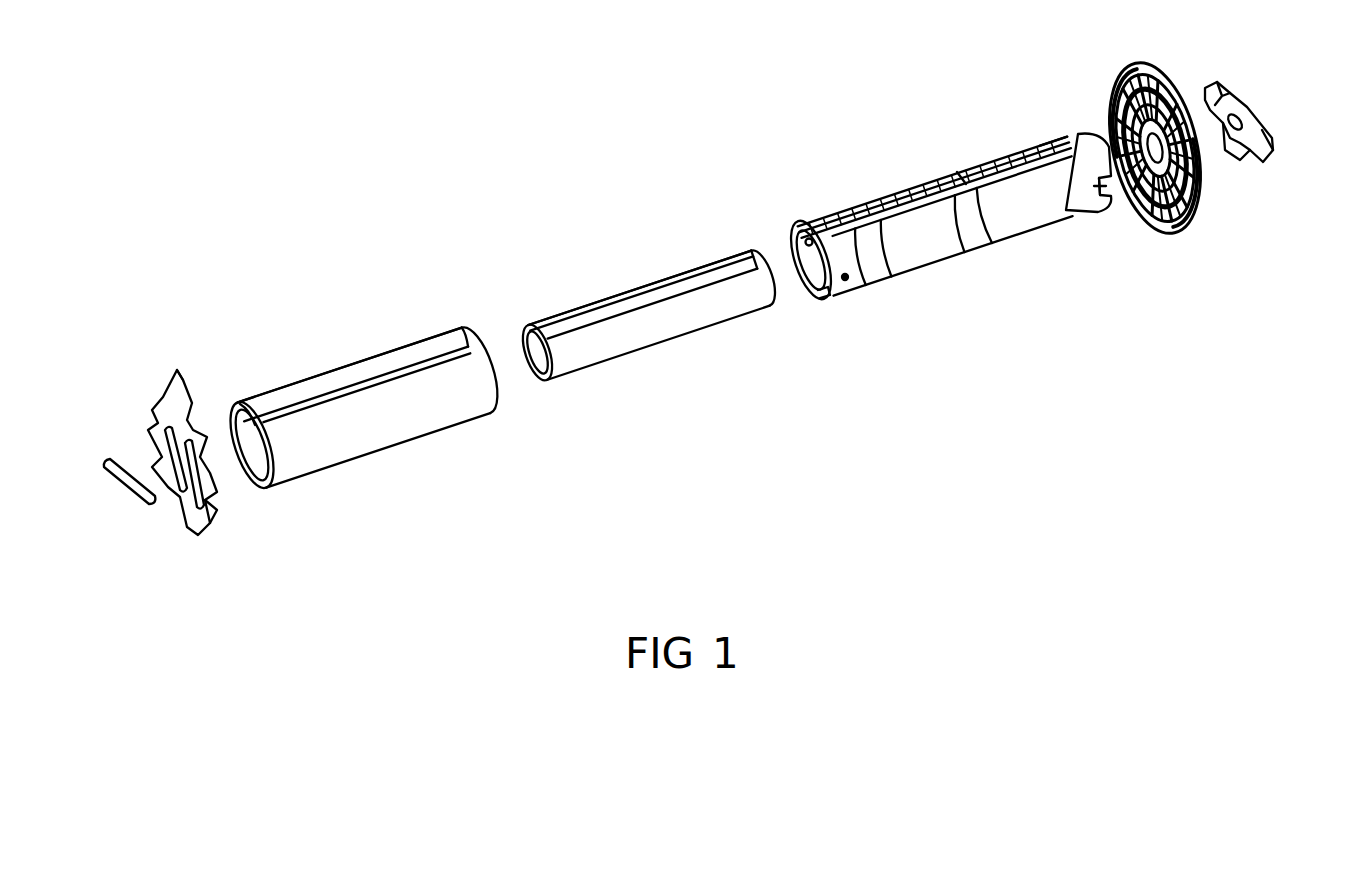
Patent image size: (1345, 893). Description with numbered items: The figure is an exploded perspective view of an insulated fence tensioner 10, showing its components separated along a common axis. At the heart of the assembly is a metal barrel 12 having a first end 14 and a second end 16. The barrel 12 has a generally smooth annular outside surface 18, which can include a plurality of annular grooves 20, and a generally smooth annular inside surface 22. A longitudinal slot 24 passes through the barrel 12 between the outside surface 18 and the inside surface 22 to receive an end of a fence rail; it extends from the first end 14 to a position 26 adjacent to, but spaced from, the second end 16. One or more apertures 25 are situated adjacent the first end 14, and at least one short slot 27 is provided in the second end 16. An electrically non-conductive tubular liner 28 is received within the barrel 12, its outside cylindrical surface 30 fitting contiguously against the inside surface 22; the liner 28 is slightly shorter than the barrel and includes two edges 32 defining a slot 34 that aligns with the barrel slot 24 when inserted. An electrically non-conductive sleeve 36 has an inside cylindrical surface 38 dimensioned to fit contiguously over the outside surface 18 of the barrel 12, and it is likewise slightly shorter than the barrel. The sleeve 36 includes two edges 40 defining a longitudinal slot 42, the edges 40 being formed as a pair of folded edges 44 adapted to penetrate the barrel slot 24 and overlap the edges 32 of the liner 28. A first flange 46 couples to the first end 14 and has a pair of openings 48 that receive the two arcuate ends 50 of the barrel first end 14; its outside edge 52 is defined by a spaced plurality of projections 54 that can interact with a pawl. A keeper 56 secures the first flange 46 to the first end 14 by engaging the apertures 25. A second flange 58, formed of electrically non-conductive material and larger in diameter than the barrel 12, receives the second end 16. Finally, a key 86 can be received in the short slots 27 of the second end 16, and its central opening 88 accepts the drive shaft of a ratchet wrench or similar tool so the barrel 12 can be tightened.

The fence tensioner 10 is at (488, 180).
The metal barrel 12 is at (917, 183).
The first end 14 is at (800, 228).
The second end 16 is at (1090, 133).
The annular outside surface 18 is at (927, 263).
The annular grooves 20 is at (973, 247).
The annular inside surface 22 is at (805, 283).
The longitudinal slot 24 is at (963, 185).
The apertures 25 is at (843, 278).
The position 26 is at (1070, 148).
The short slot 27 is at (1117, 219).
The tubular liner 28 is at (657, 333).
The outside cylindrical surface 30 is at (717, 313).
The edges 32 is at (639, 274).
The slot 34 is at (682, 285).
The sleeve 36 is at (423, 422).
The inside cylindrical surface 38 is at (253, 483).
The edges 40 is at (347, 380).
The longitudinal slot 42 is at (434, 355).
The folded edges 44 is at (237, 437).
The first flange 46 is at (195, 510).
The openings 48 is at (157, 468).
The arcuate ends 50 is at (803, 257).
The outside edge 52 is at (210, 508).
The projections 54 is at (170, 395).
The keeper 56 is at (133, 497).
The second flange 58 is at (1197, 223).
The key 86 is at (1250, 117).
The central opening 88 is at (1223, 153).